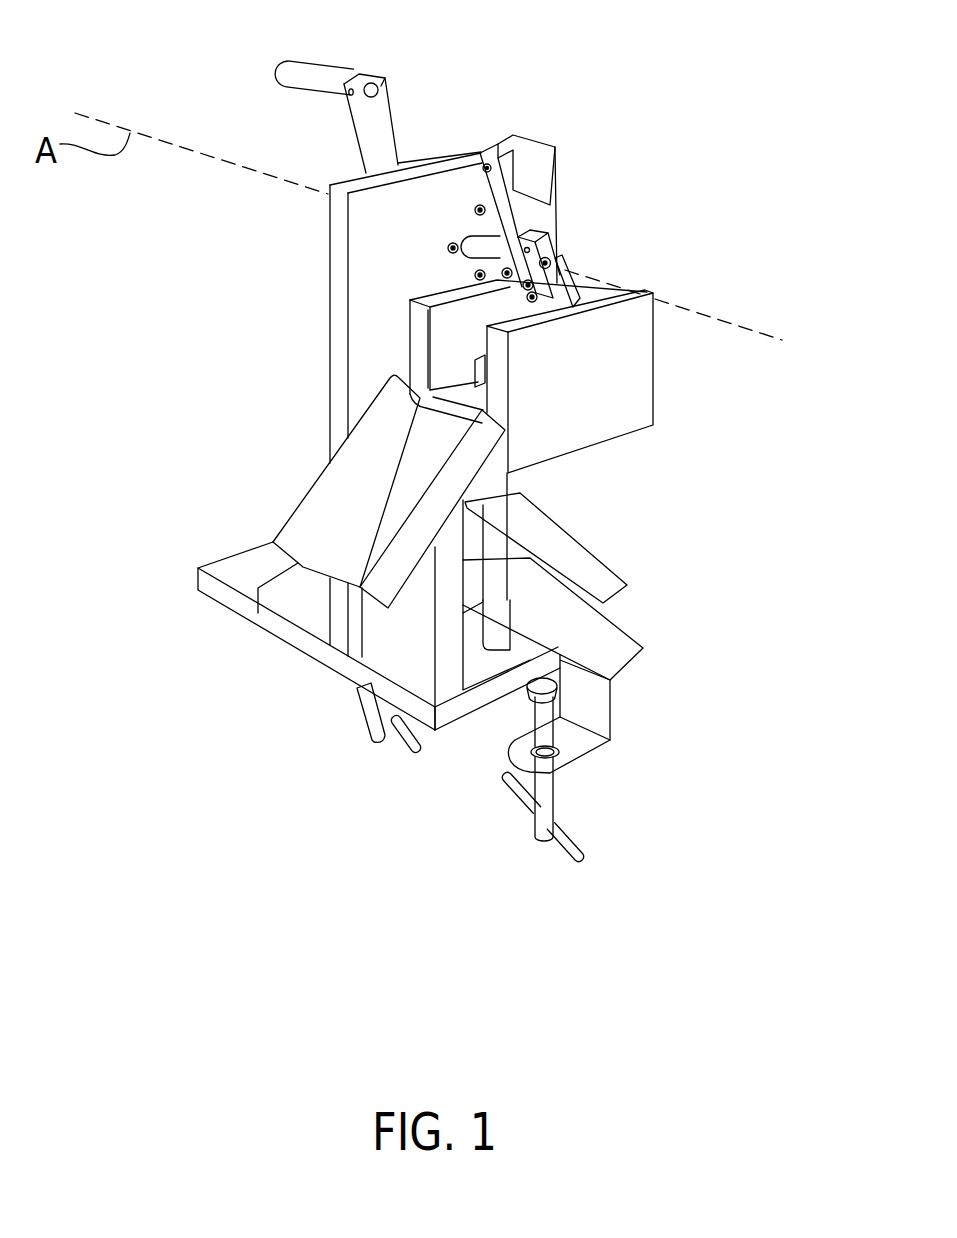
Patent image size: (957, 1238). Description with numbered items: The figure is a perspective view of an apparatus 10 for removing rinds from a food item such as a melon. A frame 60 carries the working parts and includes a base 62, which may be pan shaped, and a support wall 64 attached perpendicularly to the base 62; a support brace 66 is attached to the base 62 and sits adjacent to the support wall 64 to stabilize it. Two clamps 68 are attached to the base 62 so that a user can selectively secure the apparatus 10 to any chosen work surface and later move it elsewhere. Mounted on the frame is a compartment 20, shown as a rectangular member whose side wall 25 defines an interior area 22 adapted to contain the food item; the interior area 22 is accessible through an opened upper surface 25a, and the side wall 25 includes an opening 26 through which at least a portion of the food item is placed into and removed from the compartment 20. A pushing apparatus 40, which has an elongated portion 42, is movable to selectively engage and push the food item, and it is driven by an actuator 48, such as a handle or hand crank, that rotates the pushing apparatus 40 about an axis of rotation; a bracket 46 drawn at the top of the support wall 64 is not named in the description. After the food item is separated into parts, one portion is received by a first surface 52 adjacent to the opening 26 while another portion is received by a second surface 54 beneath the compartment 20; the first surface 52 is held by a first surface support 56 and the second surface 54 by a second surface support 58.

The apparatus for removing rinds 10 is at (795, 300).
The compartment 20 is at (645, 445).
The interior area 22 is at (482, 322).
The side wall 25 is at (620, 401).
The opened upper surface 25a is at (617, 297).
The opening 26 is at (470, 342).
The pushing apparatus 40 is at (560, 249).
The elongated portion 42 is at (477, 147).
The lever bracket 46 is at (558, 170).
The actuator 48 is at (284, 90).
The first surface 52 is at (377, 497).
The second surface 54 is at (593, 585).
The first surface support 56 is at (424, 650).
The second surface support 58 is at (560, 655).
The frame 60 is at (275, 412).
The base 62 is at (220, 590).
The support wall 64 is at (328, 240).
The support brace 66 is at (315, 595).
The clamps 68 is at (612, 728).